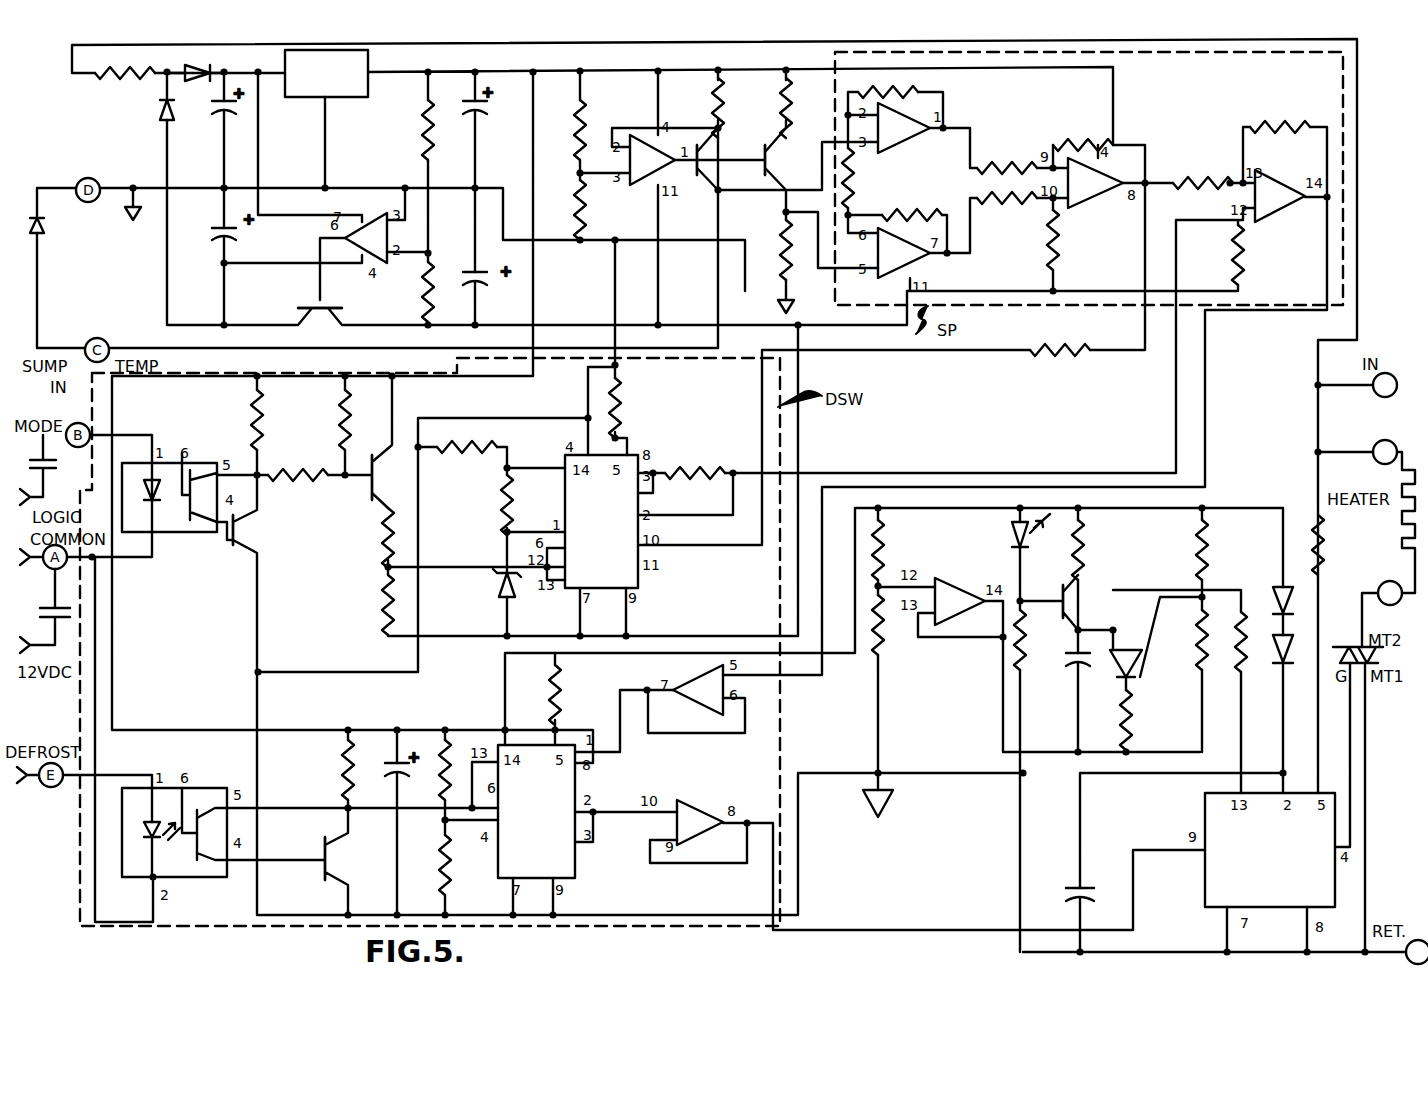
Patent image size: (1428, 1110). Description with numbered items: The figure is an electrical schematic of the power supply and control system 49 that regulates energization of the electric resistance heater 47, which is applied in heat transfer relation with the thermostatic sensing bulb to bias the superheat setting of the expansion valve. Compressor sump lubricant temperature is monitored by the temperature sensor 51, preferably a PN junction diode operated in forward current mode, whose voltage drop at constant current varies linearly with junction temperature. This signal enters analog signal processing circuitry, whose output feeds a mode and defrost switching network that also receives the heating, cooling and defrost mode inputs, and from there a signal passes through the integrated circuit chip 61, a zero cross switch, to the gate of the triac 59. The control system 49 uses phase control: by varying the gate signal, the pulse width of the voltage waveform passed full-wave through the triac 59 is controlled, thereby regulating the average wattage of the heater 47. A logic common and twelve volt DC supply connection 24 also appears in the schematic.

The logic common / 12VDC power input 24 is at (13, 531).
The electric resistance heater 47 is at (1393, 530).
The power supply and control system 49 is at (1385, 264).
The temperature sensor 51 is at (51, 223).
The triac 59 is at (1385, 658).
The integrated circuit chip 61 is at (1205, 907).